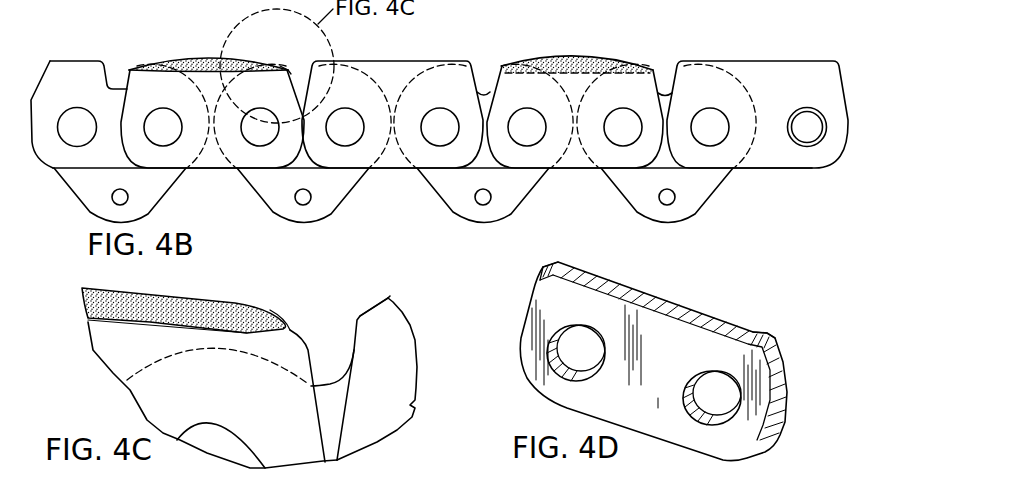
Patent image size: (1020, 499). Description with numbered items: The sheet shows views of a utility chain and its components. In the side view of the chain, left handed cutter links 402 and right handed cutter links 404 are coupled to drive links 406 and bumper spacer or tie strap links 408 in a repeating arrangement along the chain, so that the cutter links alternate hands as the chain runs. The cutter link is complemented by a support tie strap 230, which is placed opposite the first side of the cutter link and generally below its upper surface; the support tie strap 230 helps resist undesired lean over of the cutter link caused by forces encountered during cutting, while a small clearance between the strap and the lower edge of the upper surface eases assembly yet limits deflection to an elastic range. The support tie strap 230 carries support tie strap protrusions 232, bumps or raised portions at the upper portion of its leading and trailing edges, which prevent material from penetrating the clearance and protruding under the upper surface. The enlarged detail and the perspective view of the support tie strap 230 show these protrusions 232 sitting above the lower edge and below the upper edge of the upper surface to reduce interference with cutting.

In FIG. 4B, the support tie strap 230 is at (211, 171).
In FIG. 4C, the support tie strap 230 is at (305, 354).
In FIG. 4D, the support tie strap 230 is at (687, 287).
In FIG. 4B, the support tie strap protrusions 232 is at (284, 70).
In FIG. 4C, the support tie strap protrusions 232 is at (283, 312).
In FIG. 4D, the support tie strap protrusions 232 is at (550, 262).
In FIG. 4B, the left handed cutter link 402 is at (187, 57).
In FIG. 4C, the left handed cutter link 402 is at (214, 290).
In FIG. 4B, the right handed cutter link 404 is at (546, 55).
In FIG. 4B, the drive link 406 is at (80, 203).
In FIG. 4C, the drive link 406 is at (364, 304).
In FIG. 4B, the tie strap 408 is at (400, 58).
In FIG. 4C, the tie strap 408 is at (402, 366).